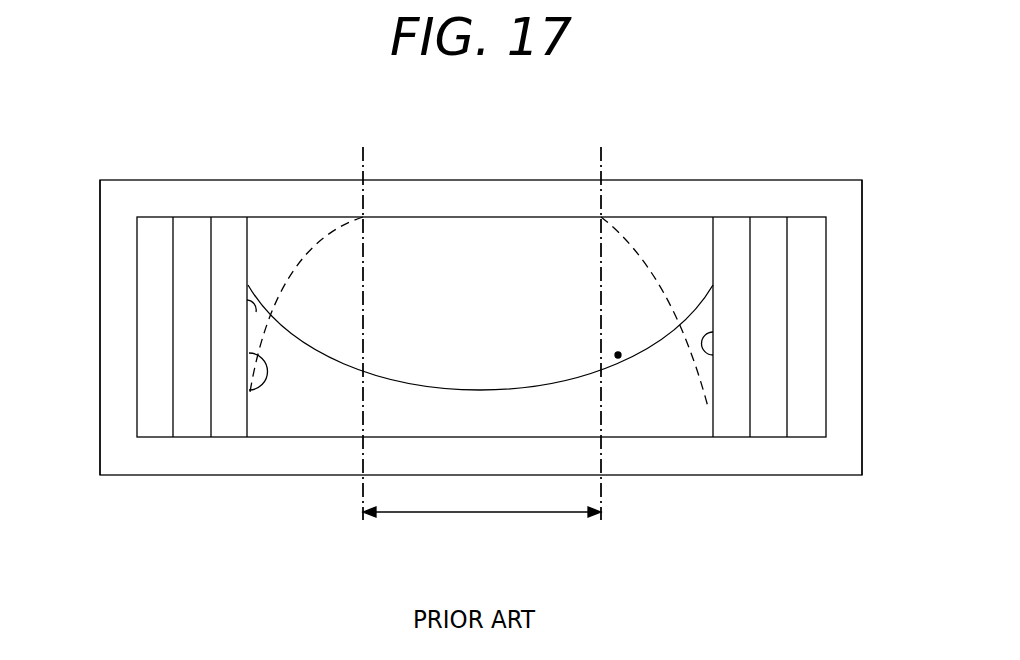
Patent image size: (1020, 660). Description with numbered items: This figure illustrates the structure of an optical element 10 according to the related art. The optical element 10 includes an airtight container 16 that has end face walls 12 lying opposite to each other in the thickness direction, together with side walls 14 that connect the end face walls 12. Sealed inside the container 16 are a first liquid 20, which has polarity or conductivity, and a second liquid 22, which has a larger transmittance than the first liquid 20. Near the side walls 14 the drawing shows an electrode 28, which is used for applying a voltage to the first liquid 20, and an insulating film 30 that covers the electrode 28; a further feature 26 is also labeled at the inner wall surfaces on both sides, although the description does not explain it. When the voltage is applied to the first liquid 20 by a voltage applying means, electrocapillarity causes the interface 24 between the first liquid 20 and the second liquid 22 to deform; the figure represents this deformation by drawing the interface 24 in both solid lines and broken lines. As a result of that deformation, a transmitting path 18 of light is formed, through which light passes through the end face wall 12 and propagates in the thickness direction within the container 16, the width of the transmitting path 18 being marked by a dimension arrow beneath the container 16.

The optical element 10 is at (659, 118).
The end face walls 12 is at (315, 180).
The side walls 14 is at (100, 240).
The airtight container 16 is at (818, 180).
The transmitting path 18 is at (430, 512).
The first liquid 20 is at (490, 240).
The second liquid 22 is at (510, 405).
The interface 24 is at (655, 275).
The corner portion 26 is at (250, 392).
The electrode 28 is at (157, 425).
The insulating film 30 is at (190, 425).